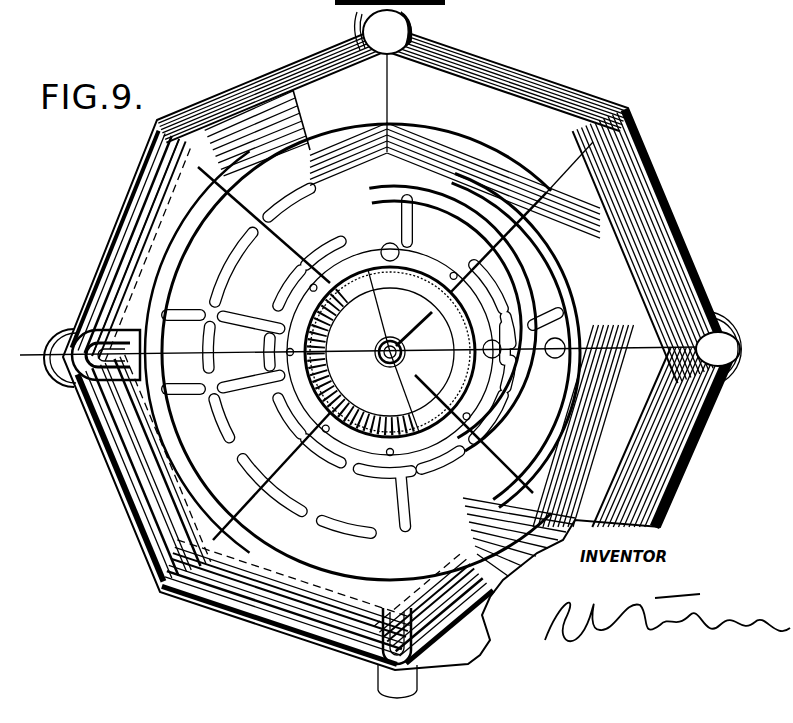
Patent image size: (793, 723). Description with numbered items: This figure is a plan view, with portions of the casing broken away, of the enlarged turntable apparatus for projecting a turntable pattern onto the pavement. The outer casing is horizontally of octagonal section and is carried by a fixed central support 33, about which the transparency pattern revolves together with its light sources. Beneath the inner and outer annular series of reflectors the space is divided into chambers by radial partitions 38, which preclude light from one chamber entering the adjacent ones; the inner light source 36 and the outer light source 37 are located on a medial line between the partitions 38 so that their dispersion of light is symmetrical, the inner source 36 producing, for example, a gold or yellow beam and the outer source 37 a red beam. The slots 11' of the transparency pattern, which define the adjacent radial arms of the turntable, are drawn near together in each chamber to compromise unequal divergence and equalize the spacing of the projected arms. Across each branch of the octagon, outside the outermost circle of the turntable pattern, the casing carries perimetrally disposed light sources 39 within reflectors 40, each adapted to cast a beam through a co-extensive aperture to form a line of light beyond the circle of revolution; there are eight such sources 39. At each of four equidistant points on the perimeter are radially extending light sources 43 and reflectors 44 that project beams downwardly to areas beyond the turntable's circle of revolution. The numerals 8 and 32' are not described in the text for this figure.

The housing 8 is at (30, 355).
The slots 11' is at (355, 352).
The guide rail 32' is at (263, 385).
The fixed central support 33 is at (384, 364).
The inner light source 36 is at (390, 262).
The outer light source 37 is at (420, 148).
The radial partitions 38 is at (292, 247).
The perimetrally disposed light sources 39 is at (160, 227).
The reflectors 40 is at (130, 250).
The radially extending light sources 43 is at (98, 345).
The reflectors 44 is at (412, 14).